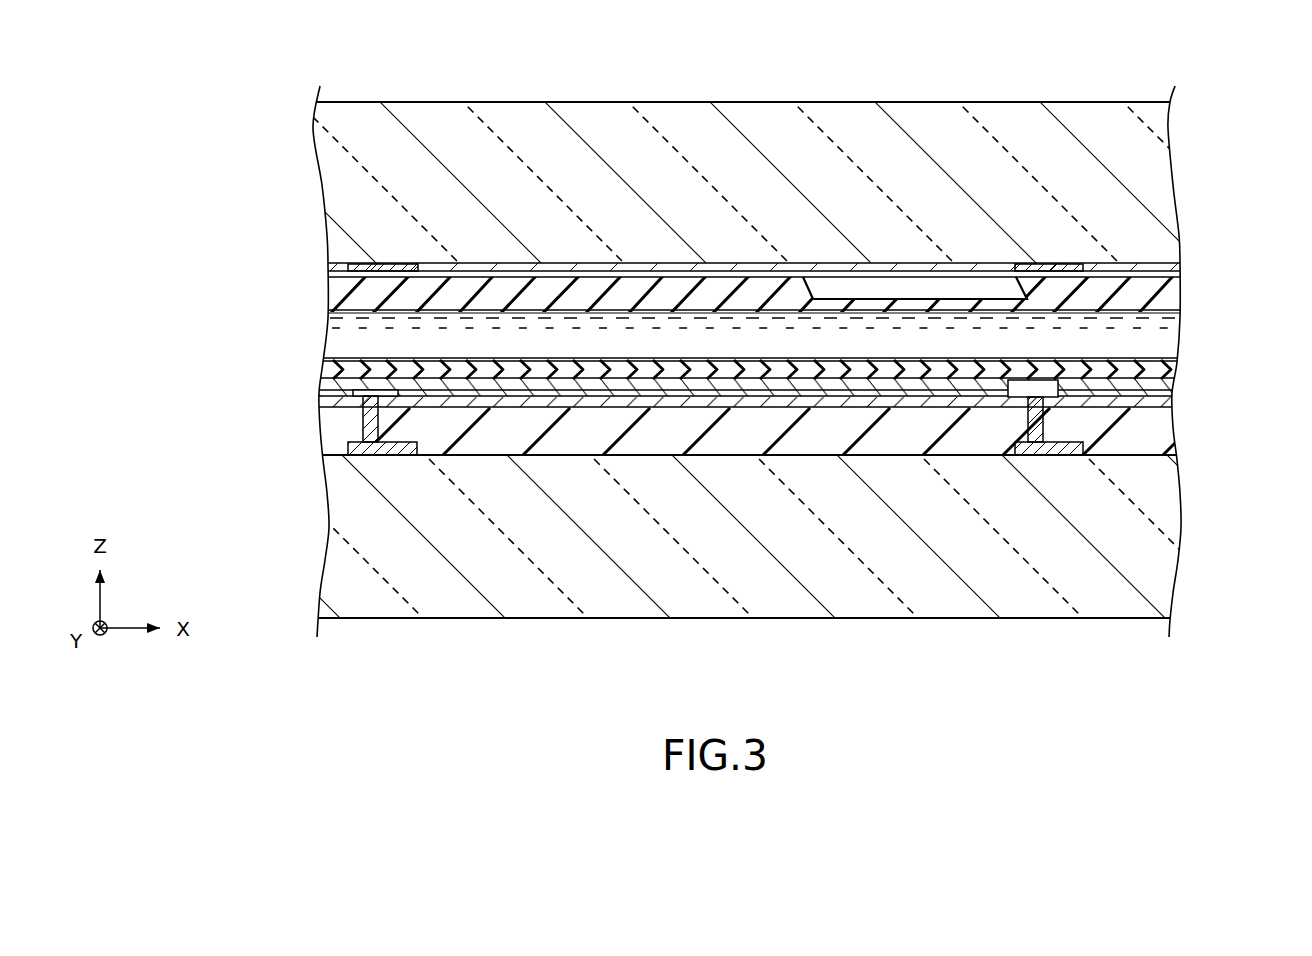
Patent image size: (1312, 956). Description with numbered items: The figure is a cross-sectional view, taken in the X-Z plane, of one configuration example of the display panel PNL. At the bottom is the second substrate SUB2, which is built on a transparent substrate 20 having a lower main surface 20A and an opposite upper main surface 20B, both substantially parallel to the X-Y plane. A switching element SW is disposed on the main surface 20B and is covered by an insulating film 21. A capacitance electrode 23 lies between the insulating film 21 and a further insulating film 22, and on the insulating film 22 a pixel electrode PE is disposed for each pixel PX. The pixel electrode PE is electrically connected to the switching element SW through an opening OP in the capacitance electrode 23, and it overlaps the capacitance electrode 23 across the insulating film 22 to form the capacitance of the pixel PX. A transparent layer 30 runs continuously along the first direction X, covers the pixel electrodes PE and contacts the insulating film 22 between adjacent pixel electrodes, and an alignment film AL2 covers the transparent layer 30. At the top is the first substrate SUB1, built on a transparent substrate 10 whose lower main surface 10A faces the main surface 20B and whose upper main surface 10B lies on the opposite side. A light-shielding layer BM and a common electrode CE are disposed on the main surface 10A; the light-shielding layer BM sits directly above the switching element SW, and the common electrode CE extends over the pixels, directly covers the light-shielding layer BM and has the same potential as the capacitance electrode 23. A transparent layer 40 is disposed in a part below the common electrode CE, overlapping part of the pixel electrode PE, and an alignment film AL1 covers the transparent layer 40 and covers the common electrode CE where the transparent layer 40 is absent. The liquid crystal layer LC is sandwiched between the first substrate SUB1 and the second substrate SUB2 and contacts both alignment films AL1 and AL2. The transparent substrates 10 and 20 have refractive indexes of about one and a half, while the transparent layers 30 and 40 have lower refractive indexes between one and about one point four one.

The display panel PNL is at (1160, 92).
The transparent substrate 10 is at (332, 141).
The main surface 10A is at (872, 278).
The main surface 10B is at (761, 94).
The first substrate SUB1 is at (1198, 201).
The light-shielding layer BM is at (379, 263).
The transparent layer 40 is at (958, 278).
The common electrode CE is at (340, 268).
The alignment film AL1 is at (347, 288).
The liquid crystal layer LC is at (332, 326).
The alignment film AL2 is at (338, 356).
The transparent layer 30 is at (336, 368).
The insulating film 22 is at (334, 385).
The capacitance electrode 23 is at (332, 397).
The pixel electrode PE is at (548, 382).
The opening OP is at (358, 414).
The insulating film 21 is at (346, 443).
The switching element SW is at (350, 456).
The pixel PX is at (565, 436).
The transparent substrate 20 is at (332, 566).
The main surface 20A is at (800, 624).
The main surface 20B is at (877, 444).
The second substrate SUB2 is at (1198, 516).